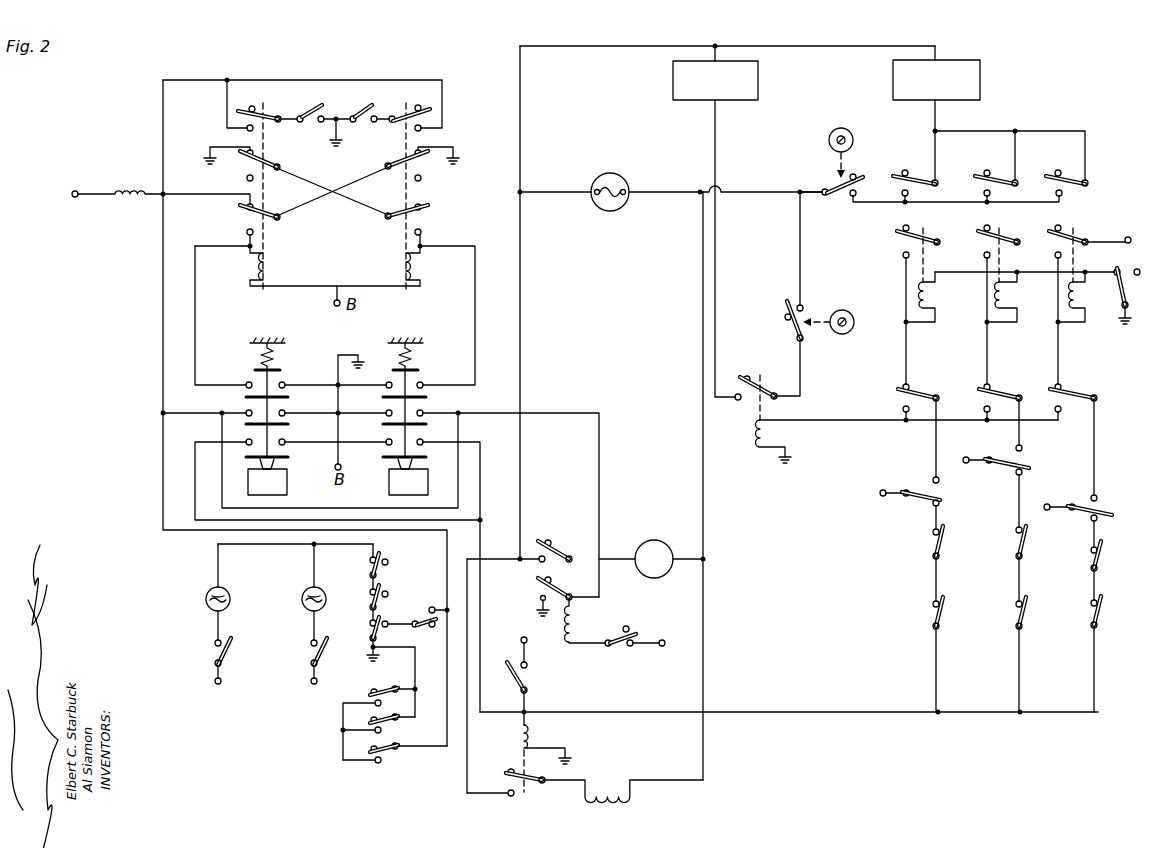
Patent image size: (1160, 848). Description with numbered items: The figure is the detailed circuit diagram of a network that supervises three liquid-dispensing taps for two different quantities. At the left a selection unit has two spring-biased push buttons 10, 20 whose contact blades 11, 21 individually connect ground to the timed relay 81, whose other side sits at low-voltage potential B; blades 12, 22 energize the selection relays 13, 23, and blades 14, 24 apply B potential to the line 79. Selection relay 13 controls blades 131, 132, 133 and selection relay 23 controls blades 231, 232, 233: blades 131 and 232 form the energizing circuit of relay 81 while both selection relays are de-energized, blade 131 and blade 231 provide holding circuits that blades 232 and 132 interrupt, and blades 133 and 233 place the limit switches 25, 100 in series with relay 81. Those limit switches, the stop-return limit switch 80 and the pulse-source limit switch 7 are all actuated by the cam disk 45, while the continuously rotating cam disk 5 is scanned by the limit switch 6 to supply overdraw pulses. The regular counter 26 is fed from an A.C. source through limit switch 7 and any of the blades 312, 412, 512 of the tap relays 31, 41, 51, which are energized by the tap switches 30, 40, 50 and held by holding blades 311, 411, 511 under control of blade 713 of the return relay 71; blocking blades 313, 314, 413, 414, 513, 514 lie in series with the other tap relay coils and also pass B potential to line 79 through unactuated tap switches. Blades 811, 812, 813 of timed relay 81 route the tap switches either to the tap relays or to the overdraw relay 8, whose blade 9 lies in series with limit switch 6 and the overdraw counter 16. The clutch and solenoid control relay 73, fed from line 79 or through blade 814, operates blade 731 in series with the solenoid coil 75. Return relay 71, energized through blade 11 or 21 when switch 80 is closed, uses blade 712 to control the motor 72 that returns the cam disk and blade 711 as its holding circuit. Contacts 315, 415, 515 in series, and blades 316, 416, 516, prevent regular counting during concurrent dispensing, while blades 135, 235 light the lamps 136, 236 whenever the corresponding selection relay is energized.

The timed relay 81 is at (142, 190).
The blade of selection relay 13 133 is at (258, 106).
The limit switch 25 is at (310, 108).
The limit switch 100 is at (364, 104).
The blade of selection relay 23 233 is at (420, 106).
The blade of selection relay 13 132 is at (264, 170).
The blade of selection relay 23 232 is at (402, 170).
The blade of selection relay 13 131 is at (274, 220).
The blade of selection relay 23 231 is at (398, 220).
The selection relay 13 is at (258, 262).
The selection relay 23 is at (410, 267).
The contact blade 12 is at (284, 394).
The contact blade 22 is at (390, 396).
The contact blade 11 is at (284, 424).
The contact blade 21 is at (390, 426).
The contact blade 14 is at (284, 456).
The contact blade 24 is at (392, 458).
The push button 10 is at (280, 488).
The push button 20 is at (388, 488).
The lamp 136 is at (230, 598).
The lamp 236 is at (302, 600).
The contact blade 135 is at (214, 656).
The contact blade 235 is at (310, 656).
The contact of tap relay 51 515 is at (382, 562).
The contact of tap relay 41 415 is at (379, 595).
The contact of tap relay 31 315 is at (370, 625).
The contact blade of tap relay 31 316 is at (378, 692).
The contact blade of tap relay 51 516 is at (382, 722).
The contact blade of tap relay 41 416 is at (382, 752).
The overdraw counter 16 is at (758, 82).
The regular counter 26 is at (980, 86).
The blade of return relay 71 712 is at (570, 552).
The blade of return relay 71 711 is at (558, 589).
The motor 72 is at (665, 546).
The return relay 71 is at (574, 626).
The stop-return limit switch 80 is at (622, 652).
The blade of timed relay 81 814 is at (526, 685).
The line 79 is at (636, 714).
The clutch and solenoid control relay 73 is at (522, 738).
The blade of relay 73 731 is at (500, 782).
The solenoid coil 75 is at (632, 792).
The limit switch 6 is at (790, 322).
The cam disk 5 is at (860, 302).
The blade of overdraw relay 8 9 is at (762, 392).
The overdraw relay 8 is at (756, 446).
The limit switch 7 is at (836, 198).
The cam disk 45 is at (866, 121).
The blade of tap relay 31 312 is at (920, 172).
The blade of tap relay 41 412 is at (1000, 172).
The blade of tap relay 51 512 is at (1070, 172).
The holding blade of tap relay 31 311 is at (922, 233).
The holding blade of tap relay 41 411 is at (998, 233).
The holding blade of tap relay 51 511 is at (1066, 228).
The tap relay 31 is at (930, 300).
The tap relay 41 is at (1008, 300).
The tap relay 51 is at (1078, 300).
The blade of return relay 71 713 is at (1126, 292).
The blade of timed relay 81 811 is at (924, 392).
The blade of timed relay 81 812 is at (1002, 392).
The blade of timed relay 81 813 is at (1076, 392).
The tap switch 30 is at (924, 502).
The tap switch 40 is at (1008, 474).
The tap switch 50 is at (1088, 520).
The blade of tap relay 41 413 is at (934, 544).
The blade of tap relay 31 313 is at (1016, 541).
The blade of tap relay 31 314 is at (1090, 564).
The blade of tap relay 51 513 is at (933, 614).
The blade of tap relay 51 514 is at (1016, 611).
The blade of tap relay 41 414 is at (1094, 614).